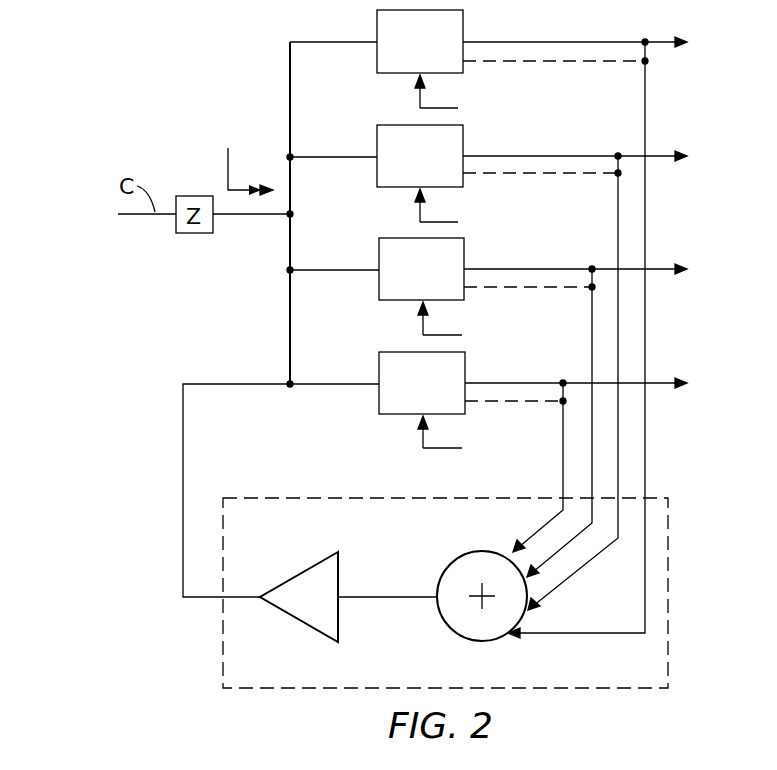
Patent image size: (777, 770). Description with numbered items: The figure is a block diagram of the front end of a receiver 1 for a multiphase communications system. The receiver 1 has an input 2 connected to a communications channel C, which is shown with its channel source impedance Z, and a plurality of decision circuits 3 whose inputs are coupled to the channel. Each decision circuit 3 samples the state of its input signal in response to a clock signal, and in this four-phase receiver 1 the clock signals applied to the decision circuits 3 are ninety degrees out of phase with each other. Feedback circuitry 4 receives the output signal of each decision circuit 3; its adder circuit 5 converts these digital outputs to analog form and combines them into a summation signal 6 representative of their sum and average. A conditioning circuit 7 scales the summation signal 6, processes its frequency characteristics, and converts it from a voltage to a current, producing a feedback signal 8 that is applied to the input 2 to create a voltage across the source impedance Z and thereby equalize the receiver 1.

The receiver 1 is at (191, 69).
The input 2 is at (251, 166).
The decision circuit 3 is at (400, 69).
The feedback circuitry 4 is at (223, 660).
The adder circuit 5 is at (465, 640).
The summation signal 6 is at (370, 597).
The conditioning circuit 7 is at (318, 570).
The feedback signal 8 is at (183, 490).